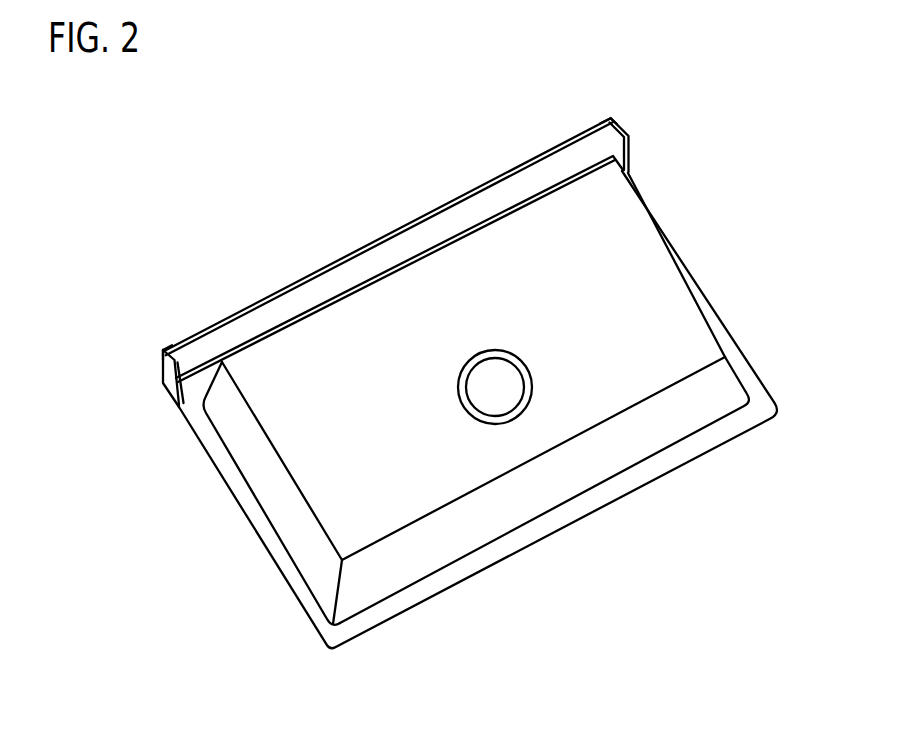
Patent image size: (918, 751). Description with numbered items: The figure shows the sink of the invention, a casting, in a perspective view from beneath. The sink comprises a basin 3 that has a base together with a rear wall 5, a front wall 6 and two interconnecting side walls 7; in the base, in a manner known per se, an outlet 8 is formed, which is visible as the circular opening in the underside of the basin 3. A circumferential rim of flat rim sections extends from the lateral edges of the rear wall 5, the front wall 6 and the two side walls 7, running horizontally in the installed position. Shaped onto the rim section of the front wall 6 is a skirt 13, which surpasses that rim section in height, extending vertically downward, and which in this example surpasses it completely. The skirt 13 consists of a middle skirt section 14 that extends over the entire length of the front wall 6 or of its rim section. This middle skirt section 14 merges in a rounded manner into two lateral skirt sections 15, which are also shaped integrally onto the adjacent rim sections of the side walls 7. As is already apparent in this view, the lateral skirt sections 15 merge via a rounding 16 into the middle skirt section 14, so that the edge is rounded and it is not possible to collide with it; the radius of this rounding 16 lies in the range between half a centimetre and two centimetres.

The basin 3 is at (657, 279).
The rear wall 5 is at (642, 442).
The front wall 6 is at (327, 302).
The side walls 7 is at (277, 503).
The outlet 8 is at (505, 392).
The skirt 13 is at (393, 244).
The middle skirt section 14 is at (253, 302).
The lateral skirt sections 15 is at (628, 129).
The rounding 16 is at (611, 117).